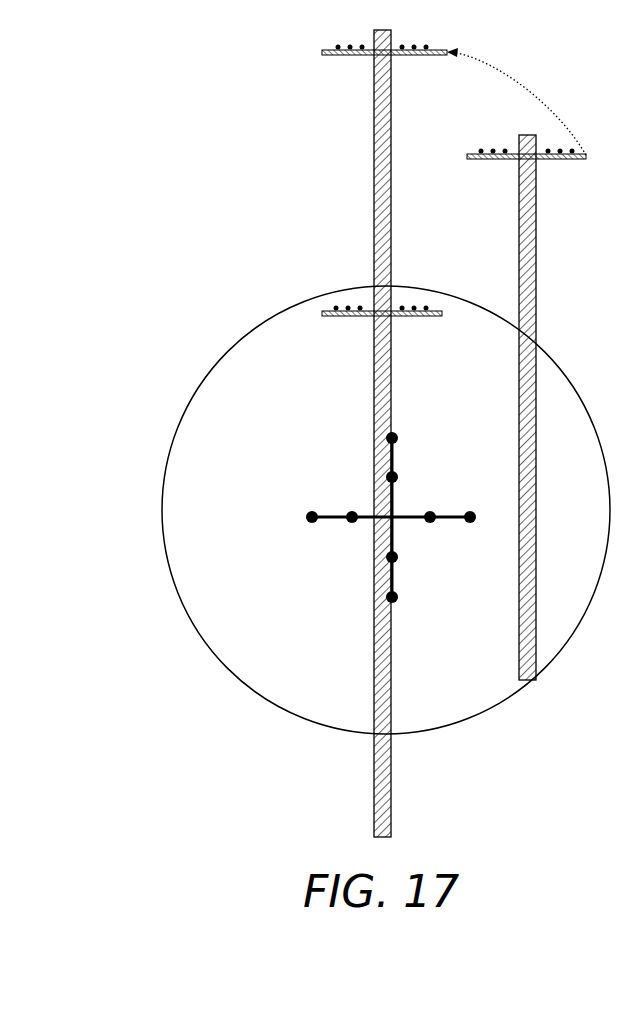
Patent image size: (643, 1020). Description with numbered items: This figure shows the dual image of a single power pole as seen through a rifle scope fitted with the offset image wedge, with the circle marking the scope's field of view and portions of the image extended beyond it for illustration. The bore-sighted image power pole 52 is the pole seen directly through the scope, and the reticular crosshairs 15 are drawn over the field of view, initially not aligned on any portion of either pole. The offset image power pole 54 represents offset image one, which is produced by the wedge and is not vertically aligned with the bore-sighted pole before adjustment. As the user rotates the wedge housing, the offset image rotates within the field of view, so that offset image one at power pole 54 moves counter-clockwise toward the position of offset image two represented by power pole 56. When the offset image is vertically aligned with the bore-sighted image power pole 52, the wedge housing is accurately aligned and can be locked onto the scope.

The reticular crosshairs 15 is at (310, 517).
The bore-sighted image power pole 52 is at (386, 777).
The offset image power pole 54 is at (527, 244).
The offset image power pole (offset image 2) 56 is at (381, 152).